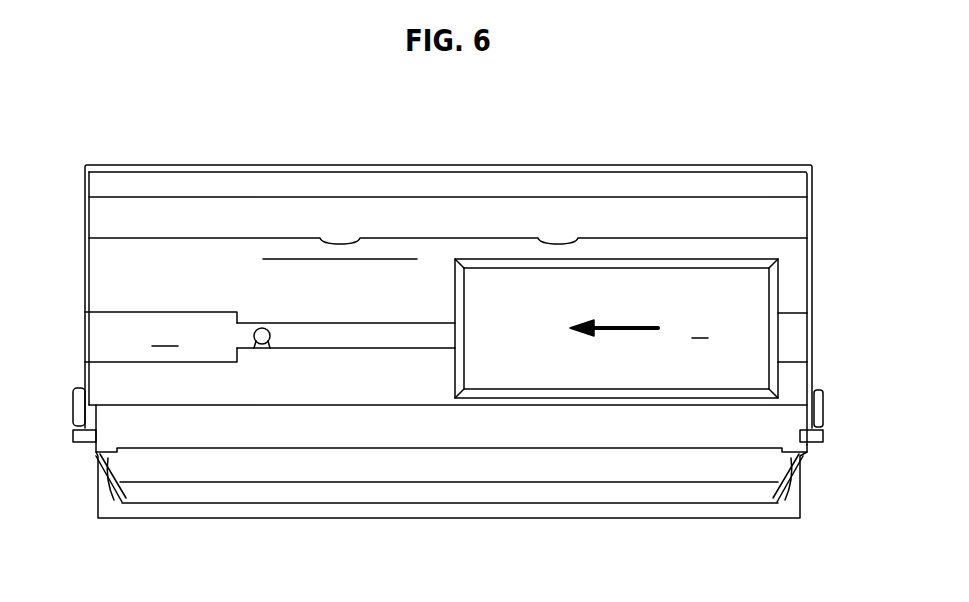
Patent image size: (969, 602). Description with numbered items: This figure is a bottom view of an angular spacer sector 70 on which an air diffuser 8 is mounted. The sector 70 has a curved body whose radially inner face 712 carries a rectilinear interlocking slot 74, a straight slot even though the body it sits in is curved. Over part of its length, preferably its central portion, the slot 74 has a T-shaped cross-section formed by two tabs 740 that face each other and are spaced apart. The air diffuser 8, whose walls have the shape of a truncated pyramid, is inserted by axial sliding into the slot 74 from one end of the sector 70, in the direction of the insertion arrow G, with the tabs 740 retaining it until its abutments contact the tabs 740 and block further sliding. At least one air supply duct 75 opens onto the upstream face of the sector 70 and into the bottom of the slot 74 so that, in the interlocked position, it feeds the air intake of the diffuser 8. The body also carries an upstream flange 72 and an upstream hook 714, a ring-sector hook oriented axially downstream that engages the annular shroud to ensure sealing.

The angular spacer sector 70 is at (528, 116).
The radially inner face 712 is at (184, 269).
The rectilinear interlocking slot 74 is at (161, 337).
The tabs 740 is at (360, 348).
The air supply duct 75 is at (272, 331).
The air diffuser 8 is at (631, 328).
The upstream hook 714 is at (822, 411).
The upstream flange 72 is at (542, 492).